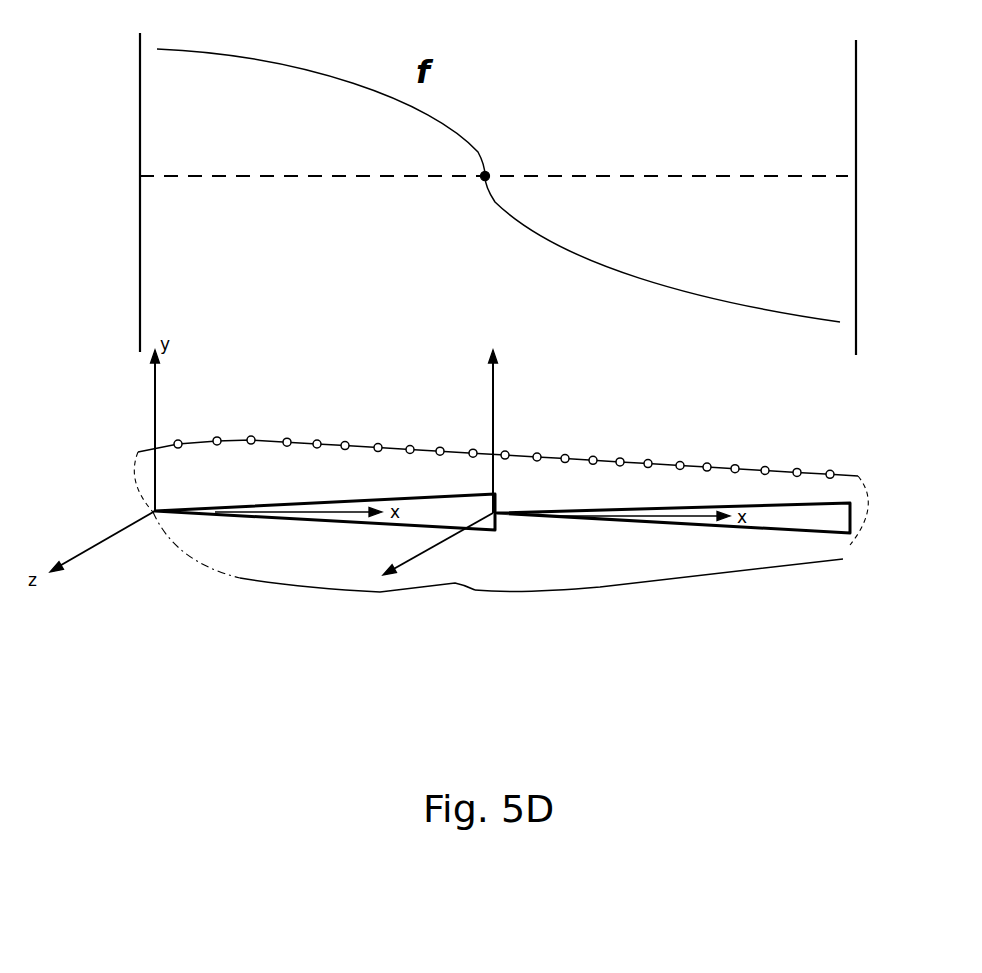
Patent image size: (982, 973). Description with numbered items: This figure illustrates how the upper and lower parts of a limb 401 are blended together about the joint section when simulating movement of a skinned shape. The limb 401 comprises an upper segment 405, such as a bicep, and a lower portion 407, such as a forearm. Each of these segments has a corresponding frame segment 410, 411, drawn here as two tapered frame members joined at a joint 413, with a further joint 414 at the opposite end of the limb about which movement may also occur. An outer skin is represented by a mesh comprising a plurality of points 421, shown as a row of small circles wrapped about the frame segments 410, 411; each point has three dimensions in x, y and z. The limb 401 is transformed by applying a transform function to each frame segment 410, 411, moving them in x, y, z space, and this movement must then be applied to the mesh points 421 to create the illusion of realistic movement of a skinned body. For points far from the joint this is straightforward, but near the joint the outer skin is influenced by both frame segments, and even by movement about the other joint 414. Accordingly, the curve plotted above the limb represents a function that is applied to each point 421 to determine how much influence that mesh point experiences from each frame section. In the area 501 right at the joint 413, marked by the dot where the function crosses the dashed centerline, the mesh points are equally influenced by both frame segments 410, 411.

The joint area 501 is at (487, 170).
The limb 401 is at (776, 428).
The mesh of points 421 is at (287, 436).
The joint 414 is at (150, 530).
The upper segment 405 is at (260, 545).
The frame segment 411 is at (362, 515).
The joint 413 is at (500, 520).
The lower portion 407 is at (630, 560).
The frame segment 410 is at (795, 517).